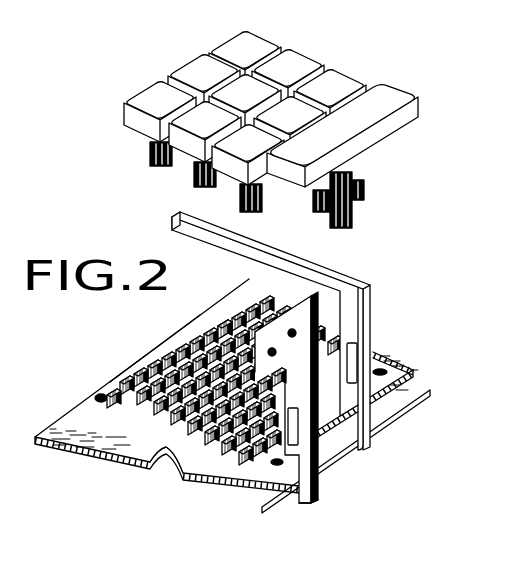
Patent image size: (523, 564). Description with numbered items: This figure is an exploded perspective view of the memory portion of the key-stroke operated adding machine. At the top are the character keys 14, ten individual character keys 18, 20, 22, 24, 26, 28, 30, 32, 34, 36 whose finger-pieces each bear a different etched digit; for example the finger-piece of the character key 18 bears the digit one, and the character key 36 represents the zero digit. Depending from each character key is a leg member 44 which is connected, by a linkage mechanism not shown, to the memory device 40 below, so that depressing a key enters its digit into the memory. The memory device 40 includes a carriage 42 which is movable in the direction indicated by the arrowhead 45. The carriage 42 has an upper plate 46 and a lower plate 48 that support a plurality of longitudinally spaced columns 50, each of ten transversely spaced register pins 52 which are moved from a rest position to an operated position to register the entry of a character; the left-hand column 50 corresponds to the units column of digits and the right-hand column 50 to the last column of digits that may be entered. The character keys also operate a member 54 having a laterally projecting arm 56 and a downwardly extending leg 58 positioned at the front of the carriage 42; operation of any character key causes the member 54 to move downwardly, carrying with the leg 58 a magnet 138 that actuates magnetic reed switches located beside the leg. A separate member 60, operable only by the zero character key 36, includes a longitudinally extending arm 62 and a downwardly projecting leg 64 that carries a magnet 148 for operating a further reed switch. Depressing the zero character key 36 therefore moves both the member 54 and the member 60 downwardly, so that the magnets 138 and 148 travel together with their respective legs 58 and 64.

The character keys 14 is at (288, 37).
The character key 18 is at (231, 165).
The character key 20 is at (343, 122).
The character key 22 is at (349, 75).
The character key 24 is at (191, 149).
The character key 26 is at (222, 92).
The character key 28 is at (308, 56).
The character key 30 is at (126, 100).
The character key 32 is at (179, 68).
The character key 34 is at (282, 46).
The character key 36 is at (389, 140).
The memory device 40 is at (107, 378).
The carriage 42 is at (147, 351).
The leg member 44 is at (151, 153).
The arrowhead 45 is at (133, 490).
The upper plate 46 is at (229, 403).
The lower plate 48 is at (270, 495).
The columns 50 is at (157, 464).
The register pins 52 is at (222, 310).
The member 54 is at (298, 331).
The arm 56 is at (326, 270).
The leg 58 is at (298, 333).
The member 60 is at (303, 403).
The arm 62 is at (300, 300).
The leg 64 is at (290, 504).
The magnet 138 is at (362, 360).
The magnet 148 is at (296, 431).